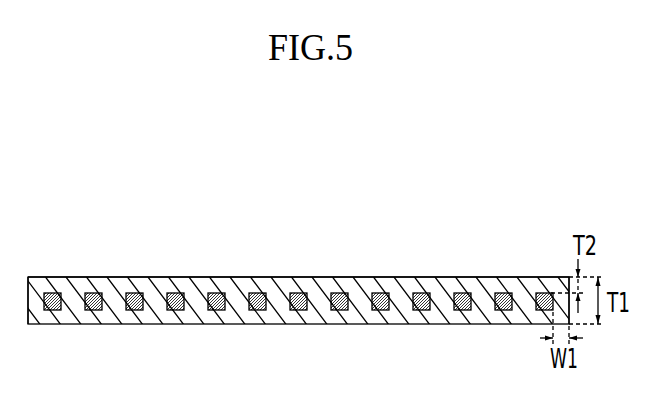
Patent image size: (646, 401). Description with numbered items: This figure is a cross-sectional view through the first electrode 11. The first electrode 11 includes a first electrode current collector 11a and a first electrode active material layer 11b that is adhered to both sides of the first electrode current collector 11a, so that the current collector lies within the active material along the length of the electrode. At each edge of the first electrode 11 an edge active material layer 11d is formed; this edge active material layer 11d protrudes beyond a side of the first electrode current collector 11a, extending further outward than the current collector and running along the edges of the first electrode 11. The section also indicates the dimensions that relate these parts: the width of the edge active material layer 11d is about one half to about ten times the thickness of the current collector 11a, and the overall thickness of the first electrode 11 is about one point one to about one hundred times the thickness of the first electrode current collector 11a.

The first electrode 11 is at (204, 263).
The first electrode current collector 11a is at (218, 310).
The first electrode active material layer 11b is at (122, 283).
The edge active material layer 11d is at (32, 325).